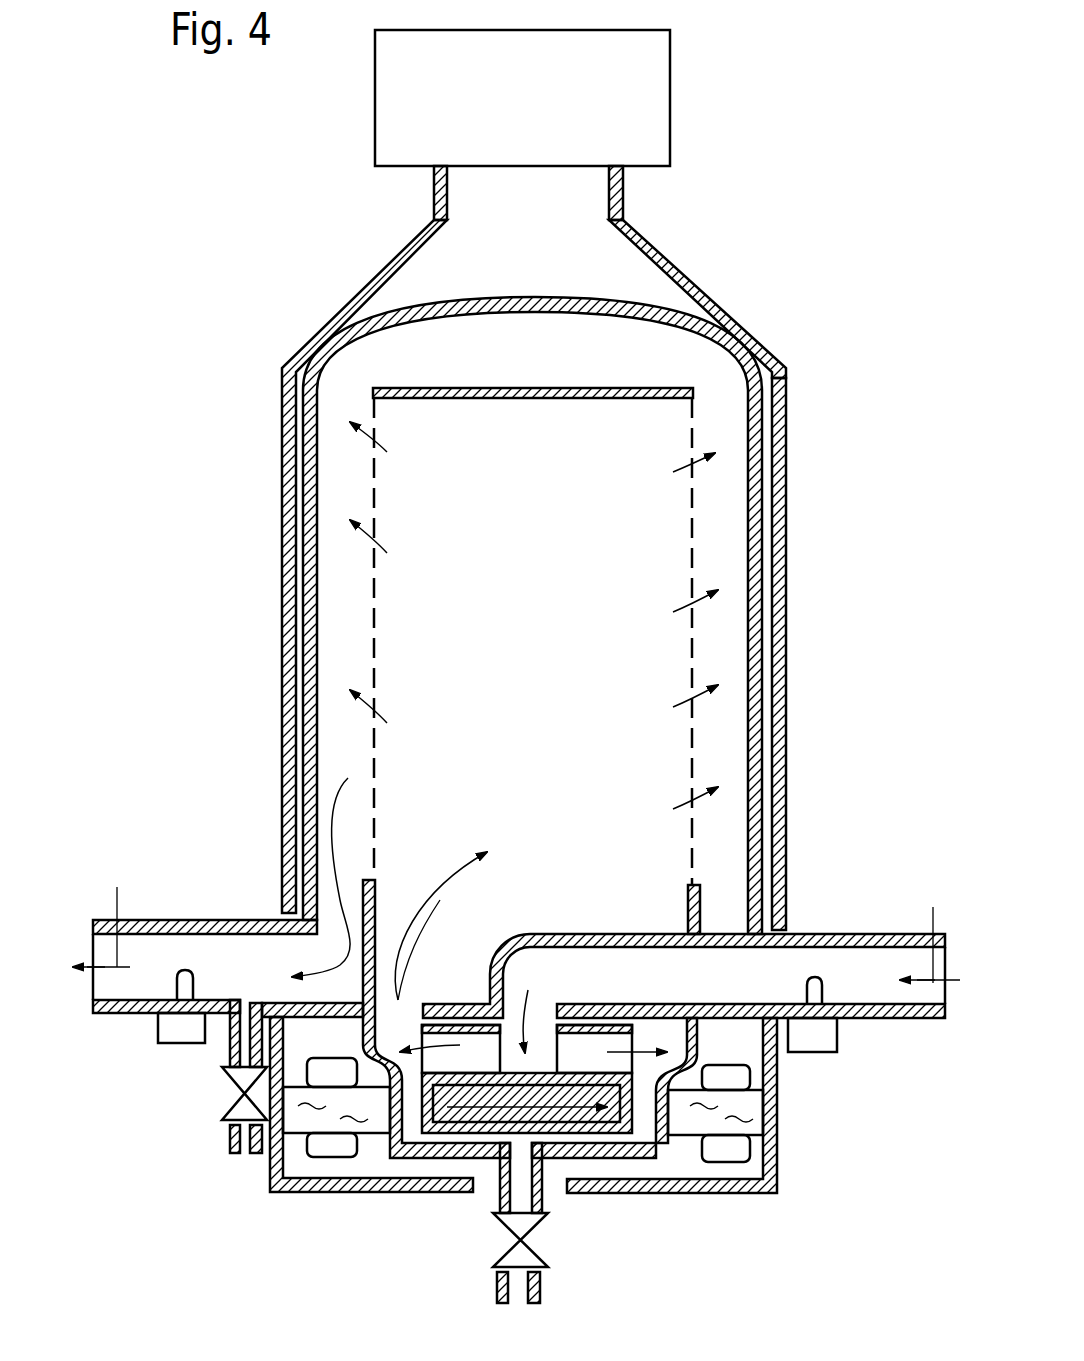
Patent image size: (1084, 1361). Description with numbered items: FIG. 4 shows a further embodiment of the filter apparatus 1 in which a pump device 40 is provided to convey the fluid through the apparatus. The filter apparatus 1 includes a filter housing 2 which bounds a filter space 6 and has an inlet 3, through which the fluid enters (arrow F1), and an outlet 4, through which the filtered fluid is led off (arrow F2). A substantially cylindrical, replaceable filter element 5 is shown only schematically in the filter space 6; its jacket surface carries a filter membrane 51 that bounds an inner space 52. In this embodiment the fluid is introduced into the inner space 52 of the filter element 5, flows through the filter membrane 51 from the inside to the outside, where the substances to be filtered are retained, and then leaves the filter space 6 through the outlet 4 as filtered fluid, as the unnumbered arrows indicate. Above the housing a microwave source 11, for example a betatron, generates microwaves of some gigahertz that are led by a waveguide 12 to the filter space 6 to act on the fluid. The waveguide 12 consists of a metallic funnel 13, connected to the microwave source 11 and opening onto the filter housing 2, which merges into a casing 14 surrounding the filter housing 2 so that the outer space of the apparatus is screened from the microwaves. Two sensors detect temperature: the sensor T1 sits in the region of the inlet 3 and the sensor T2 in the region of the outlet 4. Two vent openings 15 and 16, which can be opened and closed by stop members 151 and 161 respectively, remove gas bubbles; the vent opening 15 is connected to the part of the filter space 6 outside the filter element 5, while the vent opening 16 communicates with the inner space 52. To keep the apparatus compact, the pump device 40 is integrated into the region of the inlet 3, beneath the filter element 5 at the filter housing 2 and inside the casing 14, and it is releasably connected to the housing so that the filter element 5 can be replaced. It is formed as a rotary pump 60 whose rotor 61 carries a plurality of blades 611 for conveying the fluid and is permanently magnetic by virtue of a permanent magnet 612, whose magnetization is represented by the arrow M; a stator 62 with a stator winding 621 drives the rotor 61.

The filter apparatus 1 is at (568, 511).
The filter housing 2 is at (428, 300).
The inlet 3 is at (691, 961).
The outlet 4 is at (195, 954).
The filter element 5 is at (466, 599).
The filter space 6 is at (668, 363).
The microwave source 11 is at (521, 106).
The waveguide 12 is at (568, 548).
The metallic funnel 13 is at (677, 273).
The casing 14 is at (788, 603).
The vent opening 15 is at (191, 1092).
The vent opening 16 is at (550, 1223).
The pump device 40 is at (407, 1197).
The filter membrane 51 is at (373, 500).
The inner space 52 is at (417, 605).
The rotary pump 60 is at (493, 1083).
The rotor 61 is at (390, 1140).
The stator 62 is at (692, 1132).
The stop member 151 is at (191, 1126).
The stop member 161 is at (540, 1200).
The blades 611 is at (476, 1052).
The permanent magnet 612 is at (620, 1100).
The stator winding 621 is at (737, 1148).
The magnetization arrow M is at (498, 1107).
The inlet flow arrow F1 is at (930, 929).
The outlet flow arrow F2 is at (101, 911).
The temperature sensor T1 is at (837, 1037).
The temperature sensor T2 is at (180, 1043).